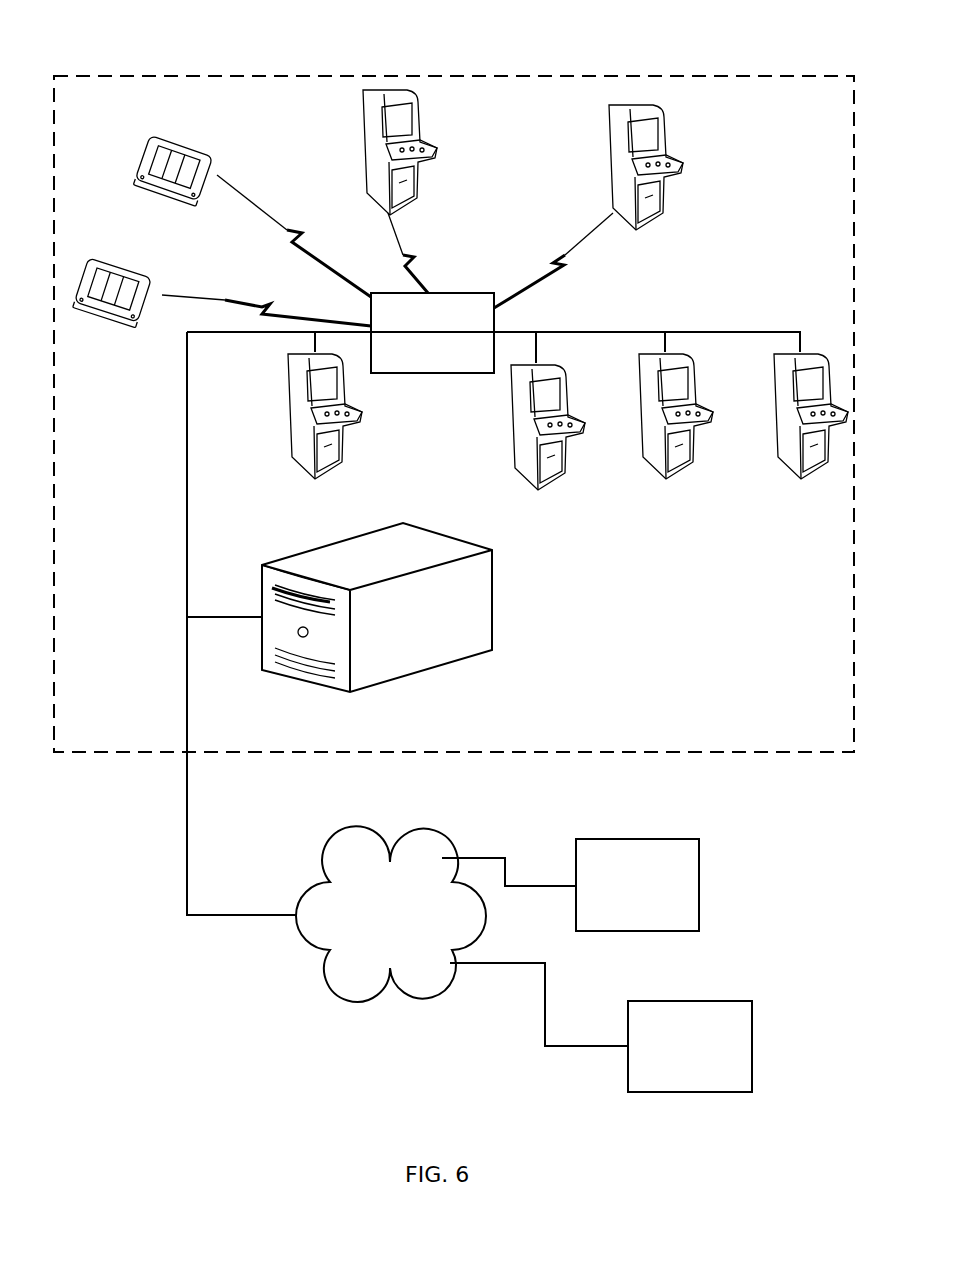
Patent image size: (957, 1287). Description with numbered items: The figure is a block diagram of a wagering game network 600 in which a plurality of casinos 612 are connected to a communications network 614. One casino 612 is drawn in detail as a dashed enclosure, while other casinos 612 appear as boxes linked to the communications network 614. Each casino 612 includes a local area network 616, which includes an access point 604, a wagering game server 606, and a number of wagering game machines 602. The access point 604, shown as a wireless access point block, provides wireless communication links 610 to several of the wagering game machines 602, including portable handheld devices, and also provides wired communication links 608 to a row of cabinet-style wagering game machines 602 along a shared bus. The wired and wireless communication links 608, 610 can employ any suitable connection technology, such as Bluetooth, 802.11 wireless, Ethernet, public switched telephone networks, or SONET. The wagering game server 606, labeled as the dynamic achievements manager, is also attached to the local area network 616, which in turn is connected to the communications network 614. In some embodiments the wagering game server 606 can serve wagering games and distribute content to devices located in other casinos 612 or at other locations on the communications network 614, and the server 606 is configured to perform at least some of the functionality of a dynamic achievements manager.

The wagering game network 600 is at (160, 12).
The wagering game machines 602 is at (218, 160).
The access point 604 is at (434, 373).
The wagering game server 606 is at (495, 583).
The wired communication links 608 is at (735, 330).
The wireless communication links 610 is at (305, 236).
The casinos 612 is at (803, 752).
The communications network 614 is at (372, 845).
The local area network 616 is at (138, 570).